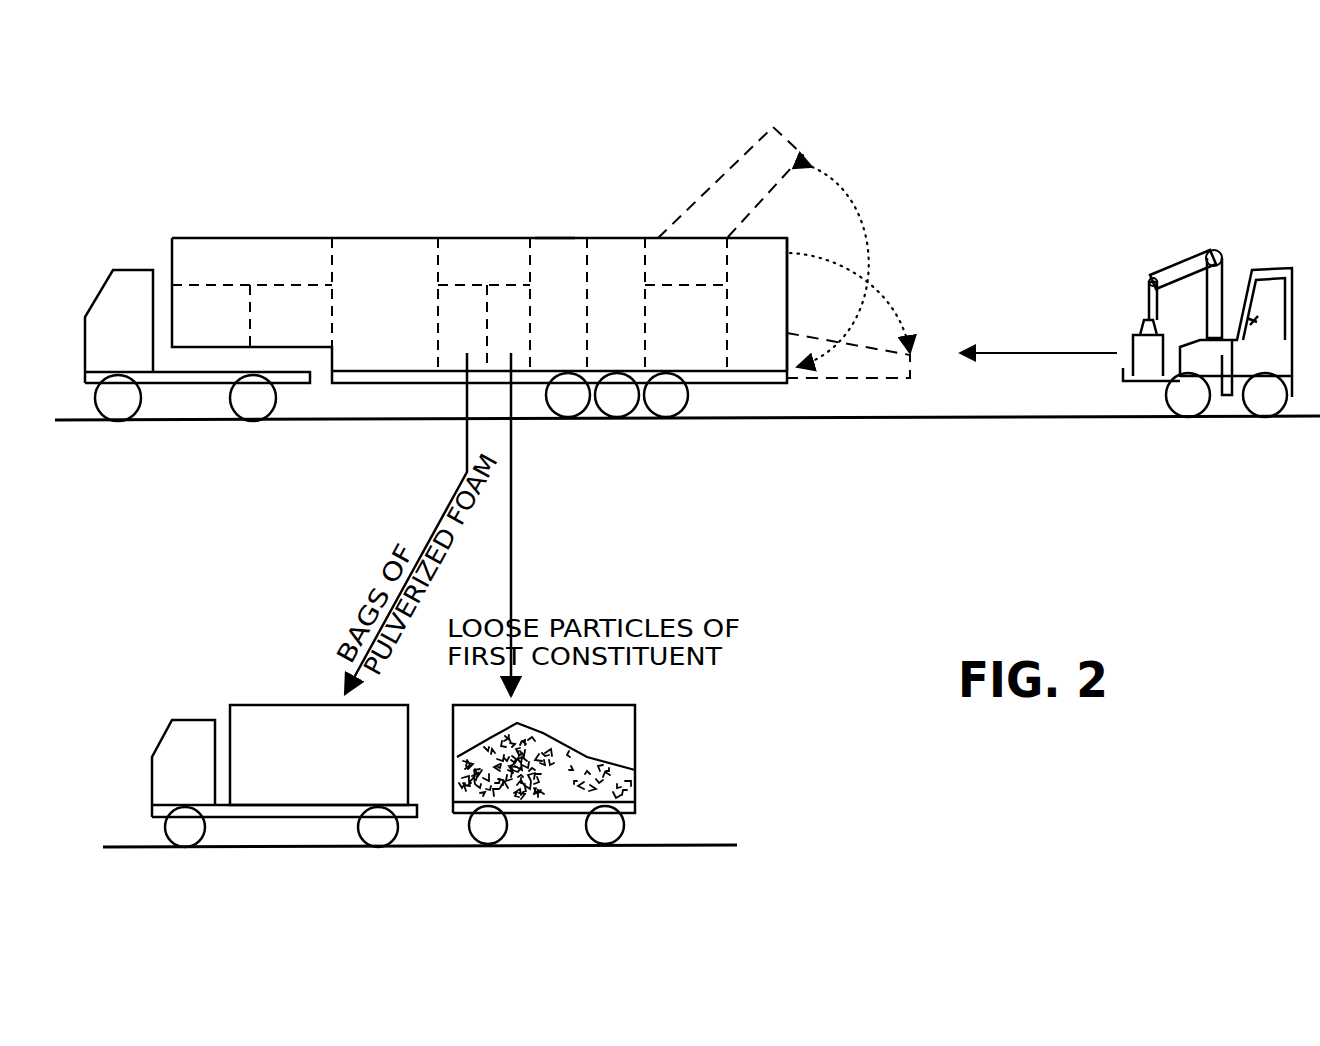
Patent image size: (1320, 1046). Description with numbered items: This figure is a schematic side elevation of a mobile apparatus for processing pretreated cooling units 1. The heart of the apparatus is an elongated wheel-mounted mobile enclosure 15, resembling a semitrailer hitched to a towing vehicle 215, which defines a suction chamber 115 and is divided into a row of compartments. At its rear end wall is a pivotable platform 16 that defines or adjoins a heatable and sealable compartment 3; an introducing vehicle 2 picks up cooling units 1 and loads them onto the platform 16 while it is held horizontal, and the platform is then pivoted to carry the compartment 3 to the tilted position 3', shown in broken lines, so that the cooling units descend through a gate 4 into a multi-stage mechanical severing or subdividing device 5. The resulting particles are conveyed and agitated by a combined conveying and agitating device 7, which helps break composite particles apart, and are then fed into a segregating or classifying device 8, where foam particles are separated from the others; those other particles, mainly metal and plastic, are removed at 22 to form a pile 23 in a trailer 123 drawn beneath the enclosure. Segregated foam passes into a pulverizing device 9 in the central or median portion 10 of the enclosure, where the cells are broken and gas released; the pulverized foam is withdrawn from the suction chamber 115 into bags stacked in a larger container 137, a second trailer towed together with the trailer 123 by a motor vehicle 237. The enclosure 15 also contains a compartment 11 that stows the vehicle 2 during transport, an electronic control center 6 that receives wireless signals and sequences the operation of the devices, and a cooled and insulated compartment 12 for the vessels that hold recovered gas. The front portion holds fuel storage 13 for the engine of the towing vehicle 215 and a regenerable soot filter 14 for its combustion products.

The cooling unit 1 is at (1169, 315).
The vehicle 2 is at (1229, 333).
The heatable and sealable compartment 3 is at (762, 304).
The pivoted position of compartment 3' is at (784, 241).
The gate 4 is at (686, 264).
The multi-stage composite mechanical severing or subdividing device 5 is at (699, 304).
The electronic control center 6 is at (621, 304).
The combined conveying and agitating device 7 is at (564, 304).
The segregating or classifying device 8 is at (511, 304).
The pulverizing device 9 is at (466, 328).
The central or median portion of enclosure 10 is at (484, 265).
The compartment 11 is at (404, 304).
The cooled and insulated compartment 12 is at (303, 292).
The fuel storage 13 is at (223, 316).
The regenerable soot filter 14 is at (252, 265).
The mobile enclosure 15 is at (383, 238).
The pivotable platform 16 is at (862, 368).
The removal location for first-constituent particles 22 is at (539, 524).
The pile 23 is at (603, 767).
The suction chamber 115 is at (545, 244).
The trailer 123 is at (637, 760).
The larger container 137 is at (260, 715).
The towing vehicle 215 is at (110, 305).
The motor vehicle 237 is at (172, 745).